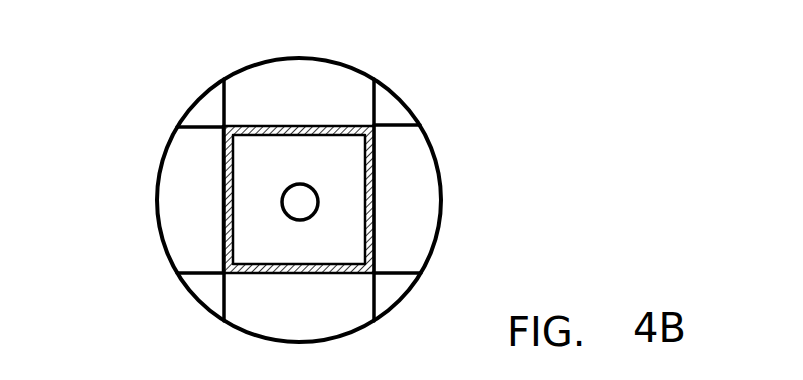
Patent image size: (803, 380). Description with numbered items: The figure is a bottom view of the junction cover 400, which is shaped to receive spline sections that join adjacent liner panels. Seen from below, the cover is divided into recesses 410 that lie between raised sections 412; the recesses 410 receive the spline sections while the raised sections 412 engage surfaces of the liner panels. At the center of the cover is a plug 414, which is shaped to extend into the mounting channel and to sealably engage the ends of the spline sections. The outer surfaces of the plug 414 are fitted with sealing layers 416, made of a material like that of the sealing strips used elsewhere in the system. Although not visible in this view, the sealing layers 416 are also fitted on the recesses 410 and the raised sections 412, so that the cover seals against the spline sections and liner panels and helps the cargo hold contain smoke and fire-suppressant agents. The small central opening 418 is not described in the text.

The junction cover 400 is at (430, 140).
The recesses 410 is at (324, 82).
The raised sections 412 is at (214, 115).
The plug 414 is at (376, 208).
The sealing layers 416 is at (343, 273).
The alignment mark opening 418 is at (282, 200).